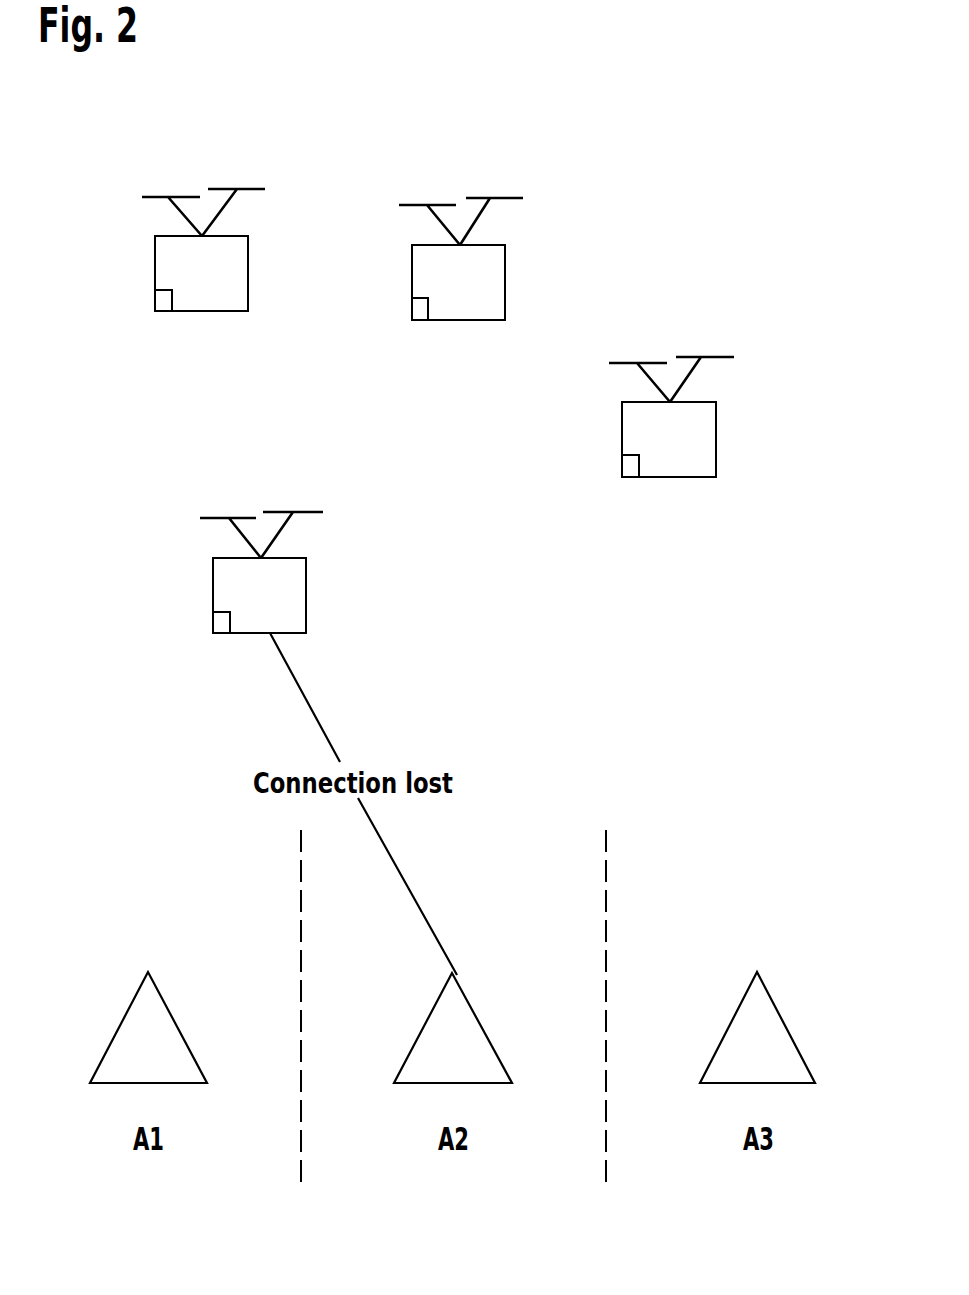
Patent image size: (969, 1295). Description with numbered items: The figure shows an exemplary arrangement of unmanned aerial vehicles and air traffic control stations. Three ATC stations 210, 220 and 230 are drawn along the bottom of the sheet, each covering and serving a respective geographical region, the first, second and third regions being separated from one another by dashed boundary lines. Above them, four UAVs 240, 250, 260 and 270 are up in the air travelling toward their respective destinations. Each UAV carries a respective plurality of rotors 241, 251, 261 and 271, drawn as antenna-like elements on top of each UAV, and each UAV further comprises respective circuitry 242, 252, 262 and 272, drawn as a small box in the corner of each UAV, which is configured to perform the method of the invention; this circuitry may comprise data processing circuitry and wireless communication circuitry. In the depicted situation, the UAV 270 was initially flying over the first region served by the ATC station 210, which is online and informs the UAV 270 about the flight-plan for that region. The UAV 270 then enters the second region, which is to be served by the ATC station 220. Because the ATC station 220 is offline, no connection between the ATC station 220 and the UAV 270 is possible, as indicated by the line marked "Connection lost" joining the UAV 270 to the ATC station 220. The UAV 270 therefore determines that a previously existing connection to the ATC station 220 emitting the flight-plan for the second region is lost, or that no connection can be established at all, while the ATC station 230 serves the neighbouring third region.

The ATC station 210 is at (166, 1003).
The ATC station 220 is at (472, 1003).
The ATC station 230 is at (777, 1003).
The UAV 240 is at (248, 272).
The rotors 241 is at (251, 189).
The circuitry 242 is at (172, 302).
The UAV 250 is at (505, 280).
The rotors 251 is at (508, 198).
The circuitry 252 is at (428, 310).
The UAV 260 is at (716, 437).
The rotors 261 is at (717, 357).
The circuitry 262 is at (639, 467).
The UAV 270 is at (306, 593).
The rotors 271 is at (307, 512).
The circuitry 272 is at (230, 622).